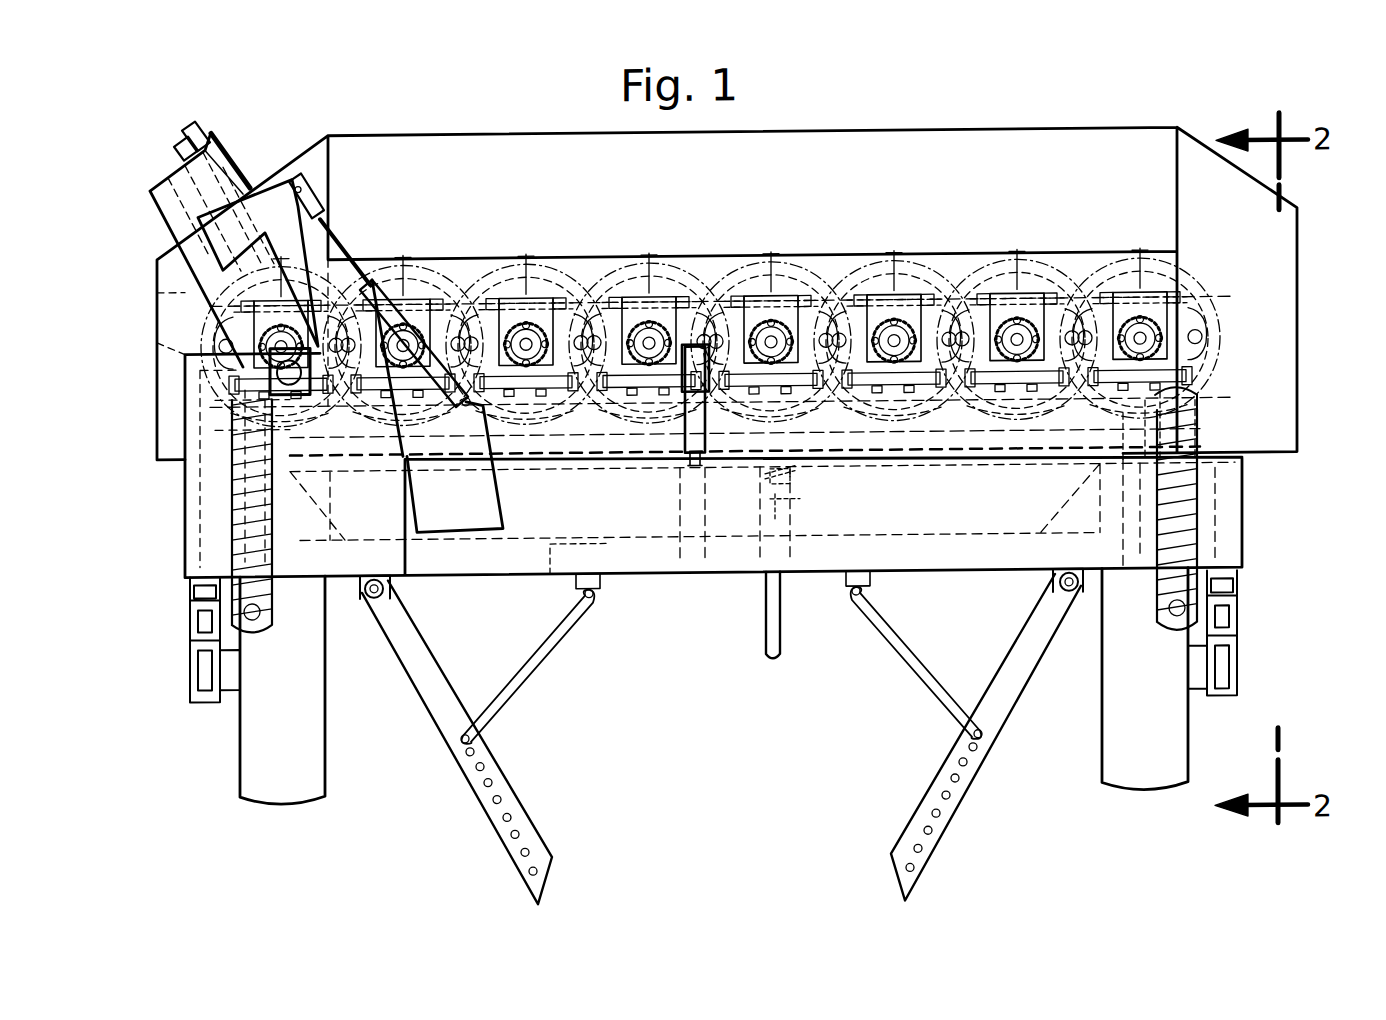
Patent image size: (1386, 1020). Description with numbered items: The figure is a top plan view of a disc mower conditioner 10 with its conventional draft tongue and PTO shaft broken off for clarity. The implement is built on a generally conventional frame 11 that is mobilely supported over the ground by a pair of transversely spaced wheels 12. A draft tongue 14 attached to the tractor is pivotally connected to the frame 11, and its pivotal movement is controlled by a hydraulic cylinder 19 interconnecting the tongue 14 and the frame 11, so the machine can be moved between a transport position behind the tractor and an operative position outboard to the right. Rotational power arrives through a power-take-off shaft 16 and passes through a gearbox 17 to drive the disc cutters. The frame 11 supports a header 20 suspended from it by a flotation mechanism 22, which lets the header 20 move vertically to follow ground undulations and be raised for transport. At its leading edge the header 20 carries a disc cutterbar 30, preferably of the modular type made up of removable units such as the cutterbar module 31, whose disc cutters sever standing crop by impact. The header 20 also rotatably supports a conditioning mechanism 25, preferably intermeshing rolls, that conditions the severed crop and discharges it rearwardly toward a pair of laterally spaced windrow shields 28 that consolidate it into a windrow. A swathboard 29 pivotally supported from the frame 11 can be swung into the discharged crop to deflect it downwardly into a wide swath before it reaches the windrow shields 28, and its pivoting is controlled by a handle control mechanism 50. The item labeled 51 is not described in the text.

The disc mower conditioner 10 is at (272, 100).
The frame 11 is at (1243, 520).
The wheels 12 is at (297, 797).
The draft tongue 14 is at (168, 229).
The power-take-off shaft 16 is at (227, 156).
The gearbox 17 is at (225, 319).
The hydraulic cylinder 19 is at (423, 300).
The header 20 is at (1297, 344).
The flotation mechanism 22 is at (272, 611).
The conditioning mechanism 25 is at (1205, 413).
The windrow shields 28 is at (500, 840).
The swathboard 29 is at (962, 545).
The disc cutterbar 30 is at (955, 298).
The cutterbar module 31 is at (760, 301).
The handle control mechanism 50 is at (798, 582).
The hitch rod 51 is at (765, 632).